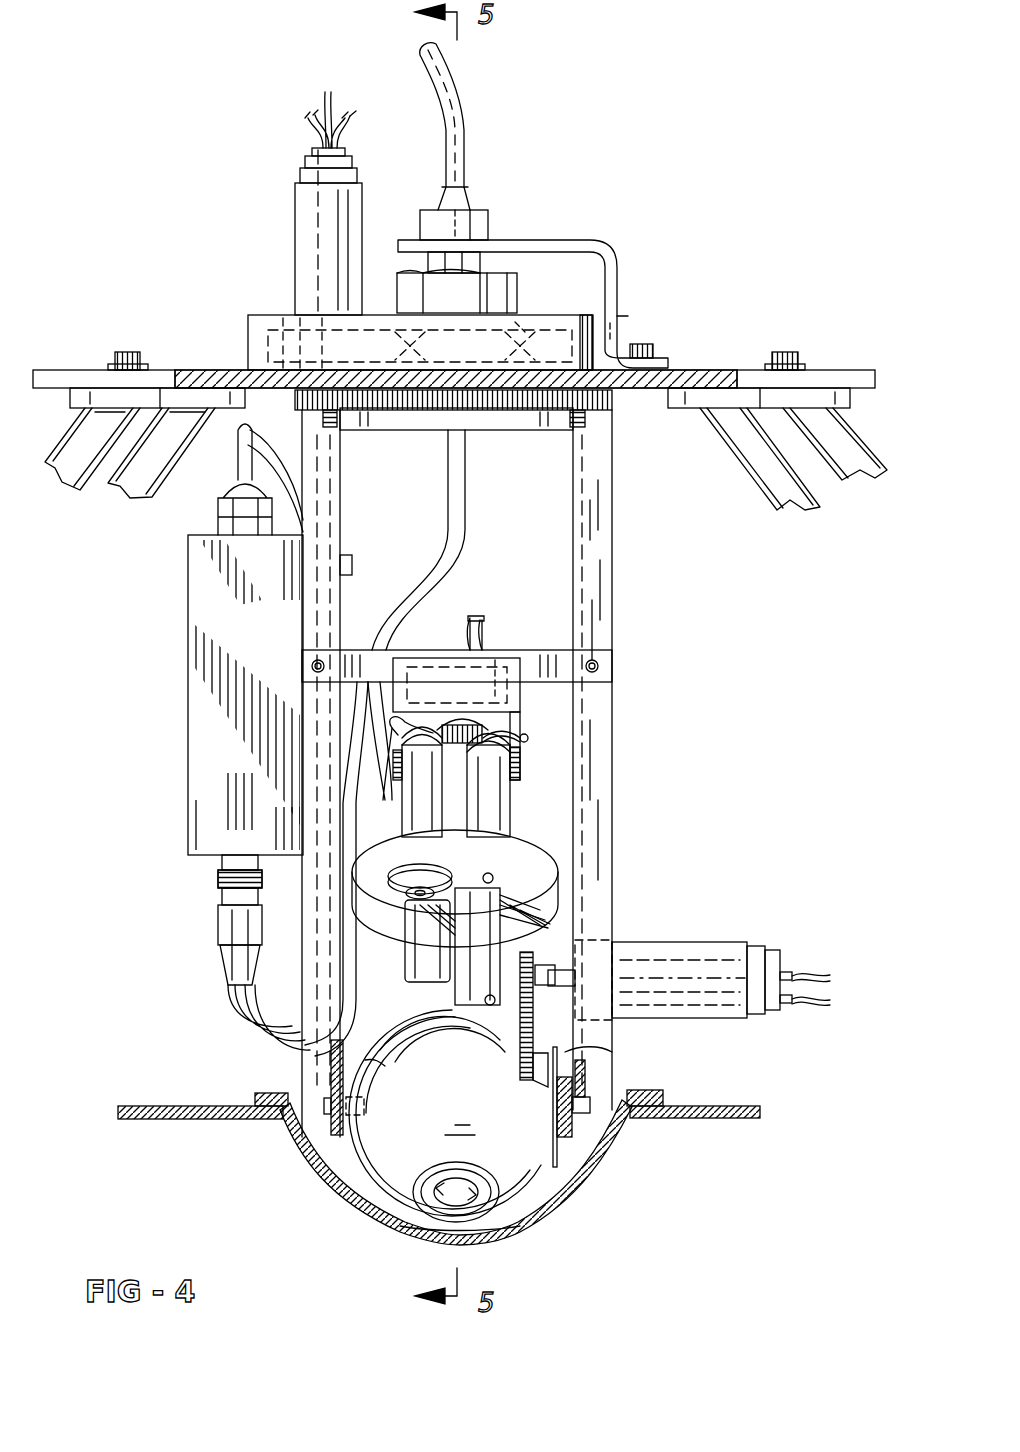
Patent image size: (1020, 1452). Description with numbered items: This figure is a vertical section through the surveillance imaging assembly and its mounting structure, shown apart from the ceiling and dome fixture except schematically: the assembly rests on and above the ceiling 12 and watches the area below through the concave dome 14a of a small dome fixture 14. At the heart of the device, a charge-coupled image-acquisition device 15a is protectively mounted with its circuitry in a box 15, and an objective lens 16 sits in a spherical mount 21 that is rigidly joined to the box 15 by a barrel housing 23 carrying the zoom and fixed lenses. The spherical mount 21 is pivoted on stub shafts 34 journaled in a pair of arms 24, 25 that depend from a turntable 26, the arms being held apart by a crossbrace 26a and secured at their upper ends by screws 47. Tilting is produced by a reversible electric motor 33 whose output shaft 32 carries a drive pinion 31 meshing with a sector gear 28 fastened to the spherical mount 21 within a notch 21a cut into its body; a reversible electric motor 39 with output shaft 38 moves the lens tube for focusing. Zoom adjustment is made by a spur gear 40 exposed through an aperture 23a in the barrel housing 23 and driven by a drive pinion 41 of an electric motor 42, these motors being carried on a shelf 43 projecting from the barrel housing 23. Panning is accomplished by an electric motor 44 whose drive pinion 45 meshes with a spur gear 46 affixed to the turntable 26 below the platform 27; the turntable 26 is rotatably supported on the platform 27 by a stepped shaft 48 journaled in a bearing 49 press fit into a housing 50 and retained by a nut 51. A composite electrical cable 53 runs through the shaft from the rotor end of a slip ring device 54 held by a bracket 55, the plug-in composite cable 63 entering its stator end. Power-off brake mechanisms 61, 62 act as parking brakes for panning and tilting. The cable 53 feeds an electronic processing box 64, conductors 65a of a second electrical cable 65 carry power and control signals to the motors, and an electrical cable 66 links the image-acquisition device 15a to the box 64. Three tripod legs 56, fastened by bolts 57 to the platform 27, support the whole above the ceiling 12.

The ceiling 12 is at (728, 1120).
The dome fixture 14 is at (265, 1093).
The concave dome 14a is at (575, 1215).
The box 15 is at (522, 698).
The image-acquisition device 15a is at (505, 650).
The objective lens 16 is at (455, 1200).
The spherical mount 21 is at (400, 1182).
The notch 21a is at (565, 1055).
The barrel housing 23 is at (407, 960).
The aperture 23a is at (425, 935).
The arm 24 is at (322, 620).
The arm 25 is at (600, 530).
The turntable 26 is at (498, 432).
The crossbrace 26a is at (598, 652).
The platform 27 is at (698, 372).
The sector gear 28 is at (520, 1060).
The drive pinion 31 is at (500, 1008).
The output shaft 32 is at (592, 945).
The electric motor 33 is at (706, 1000).
The stub shaft 34 is at (325, 1112).
The output shaft 38 is at (503, 792).
The electric motor 39 is at (503, 922).
The spur gear 40 is at (482, 880).
The drive pinion 41 is at (450, 885).
The electric motor 42 is at (430, 800).
The shelf 43 is at (530, 872).
The electric motor 44 is at (300, 217).
The drive pinion 45 is at (251, 478).
The spur gear 46 is at (612, 400).
The screws 47 is at (330, 427).
The stepped shaft 48 is at (520, 312).
The bearing 49 is at (622, 311).
The housing 50 is at (575, 312).
The nut 51 is at (497, 290).
The composite electrical cable 53 is at (440, 548).
The slip ring device 54 is at (500, 225).
The bracket 55 is at (590, 240).
The tripod legs 56 is at (82, 442).
The bolts 57 is at (127, 350).
The power-off brake mechanism 61 is at (258, 320).
The power-off brake mechanism 62 is at (578, 1140).
The composite cable 63 is at (453, 133).
The electronic processing box 64 is at (215, 775).
The electrical cable 65 is at (275, 1015).
The conductors 65a is at (843, 972).
The electrical cable 66 is at (238, 457).